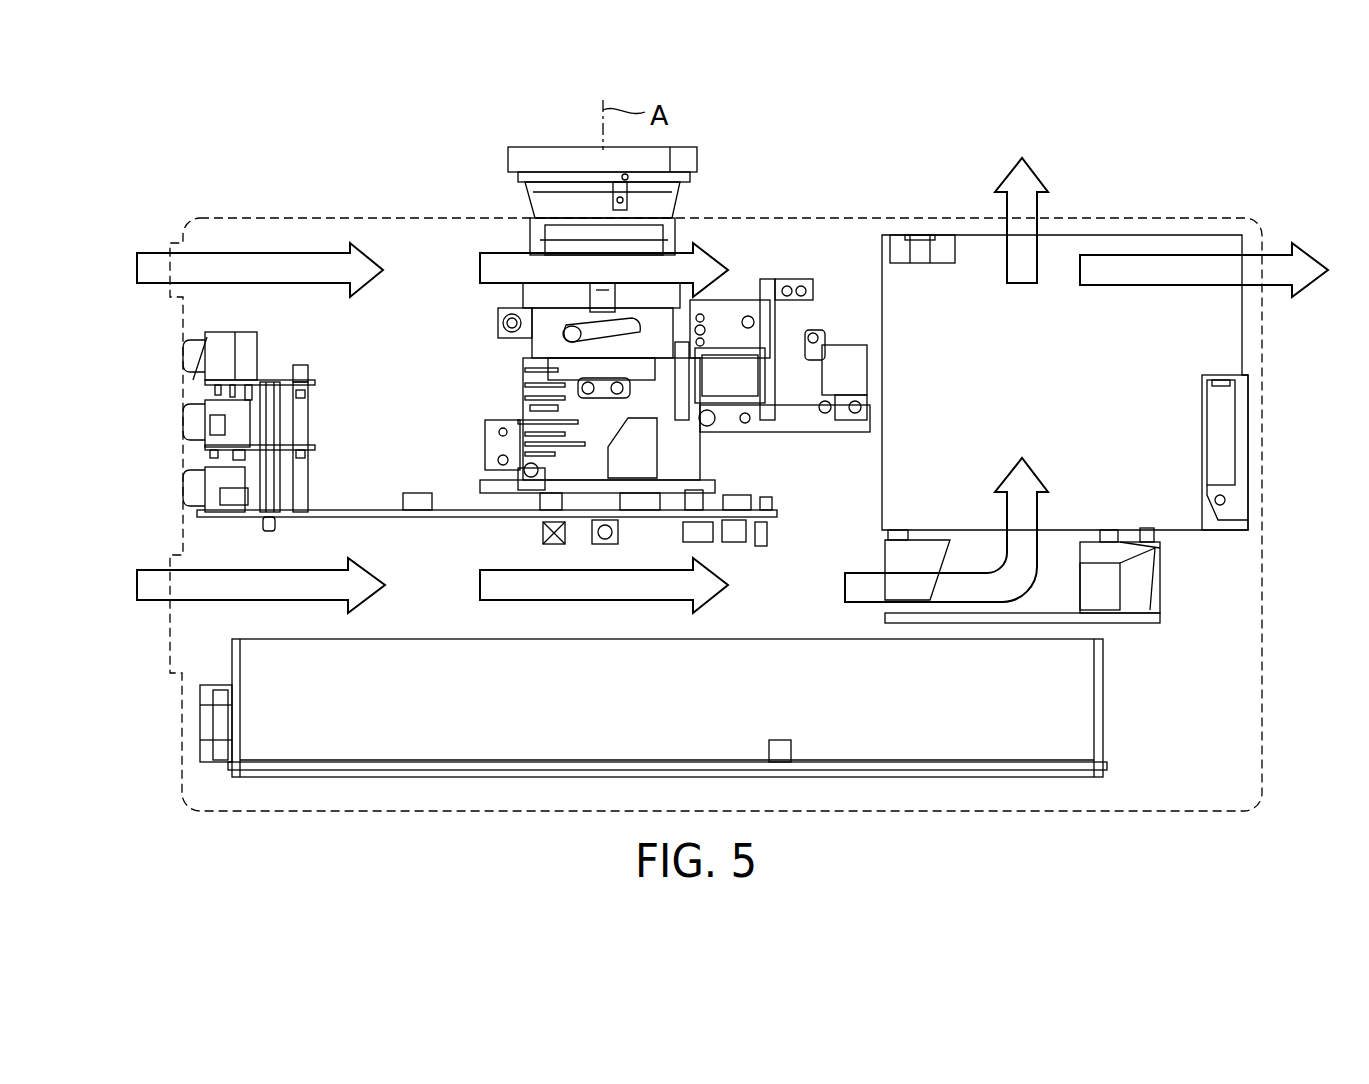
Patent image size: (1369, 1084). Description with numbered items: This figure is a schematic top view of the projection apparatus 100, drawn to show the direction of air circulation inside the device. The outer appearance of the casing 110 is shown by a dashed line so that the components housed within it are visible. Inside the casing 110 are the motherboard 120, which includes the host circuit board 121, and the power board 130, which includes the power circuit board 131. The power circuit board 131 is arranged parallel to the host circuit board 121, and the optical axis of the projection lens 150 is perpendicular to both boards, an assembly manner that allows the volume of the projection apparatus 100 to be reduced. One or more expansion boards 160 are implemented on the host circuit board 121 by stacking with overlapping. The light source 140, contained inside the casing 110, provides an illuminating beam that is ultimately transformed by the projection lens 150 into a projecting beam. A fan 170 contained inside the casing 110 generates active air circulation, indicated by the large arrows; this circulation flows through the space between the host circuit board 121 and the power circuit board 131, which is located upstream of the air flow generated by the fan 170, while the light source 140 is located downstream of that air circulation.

The projection apparatus 100 is at (1232, 182).
The casing 110 is at (1130, 218).
The motherboard 120 is at (168, 495).
The host circuit board 121 is at (363, 512).
The power board 130 is at (190, 730).
The power circuit board 131 is at (297, 772).
The light source 140 is at (1215, 330).
The projection lens 150 is at (683, 162).
The expansion boards 160 is at (168, 362).
The fan 170 is at (1137, 618).